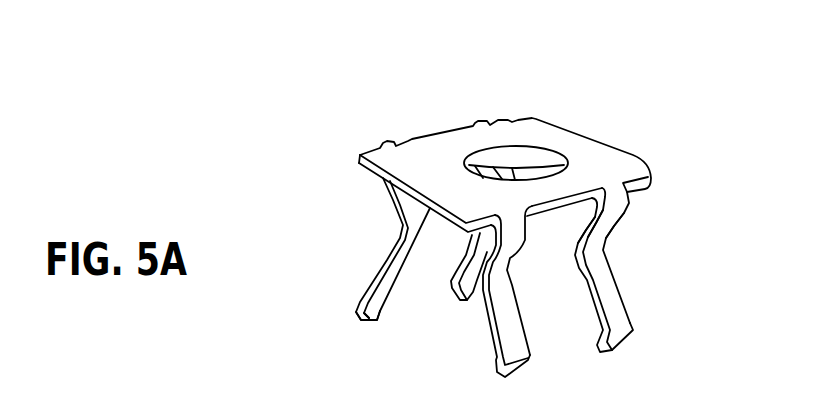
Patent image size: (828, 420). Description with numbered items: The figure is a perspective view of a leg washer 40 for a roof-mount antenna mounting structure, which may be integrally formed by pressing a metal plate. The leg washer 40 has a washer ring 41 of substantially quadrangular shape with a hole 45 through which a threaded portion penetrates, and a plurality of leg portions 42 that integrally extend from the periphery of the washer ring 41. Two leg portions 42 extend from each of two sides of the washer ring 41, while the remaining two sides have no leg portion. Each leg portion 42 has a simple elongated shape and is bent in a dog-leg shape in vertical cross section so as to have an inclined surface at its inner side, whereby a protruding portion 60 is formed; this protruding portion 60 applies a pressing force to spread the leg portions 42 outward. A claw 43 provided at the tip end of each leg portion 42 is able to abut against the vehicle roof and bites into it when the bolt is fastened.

The leg washer 40 is at (342, 190).
The washer ring 41 is at (538, 133).
The leg portions 42 is at (383, 263).
The claw 43 is at (360, 321).
The hole 45 is at (480, 158).
The protruding portion 60 is at (597, 242).